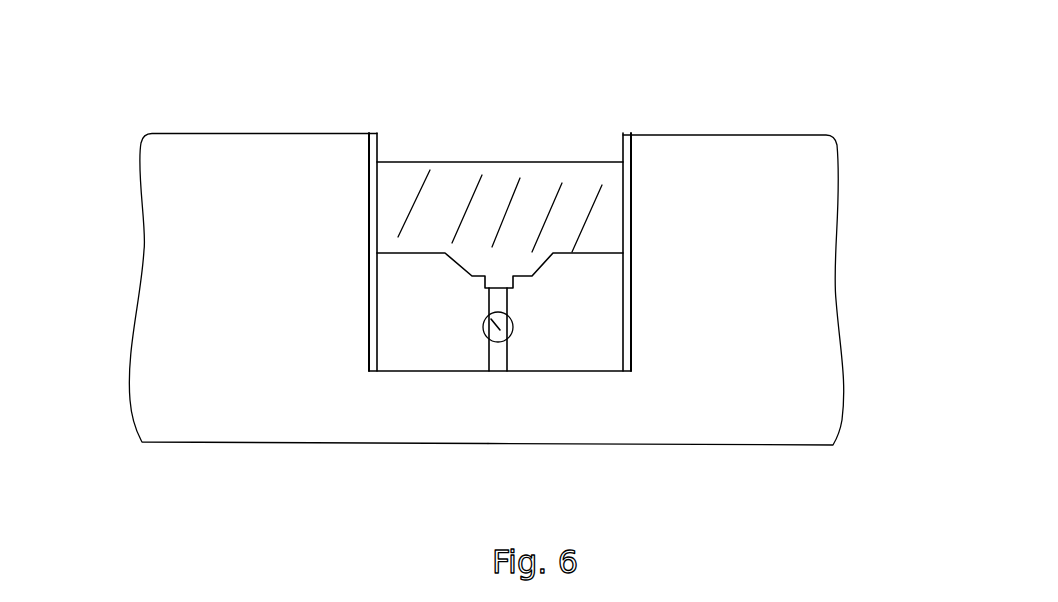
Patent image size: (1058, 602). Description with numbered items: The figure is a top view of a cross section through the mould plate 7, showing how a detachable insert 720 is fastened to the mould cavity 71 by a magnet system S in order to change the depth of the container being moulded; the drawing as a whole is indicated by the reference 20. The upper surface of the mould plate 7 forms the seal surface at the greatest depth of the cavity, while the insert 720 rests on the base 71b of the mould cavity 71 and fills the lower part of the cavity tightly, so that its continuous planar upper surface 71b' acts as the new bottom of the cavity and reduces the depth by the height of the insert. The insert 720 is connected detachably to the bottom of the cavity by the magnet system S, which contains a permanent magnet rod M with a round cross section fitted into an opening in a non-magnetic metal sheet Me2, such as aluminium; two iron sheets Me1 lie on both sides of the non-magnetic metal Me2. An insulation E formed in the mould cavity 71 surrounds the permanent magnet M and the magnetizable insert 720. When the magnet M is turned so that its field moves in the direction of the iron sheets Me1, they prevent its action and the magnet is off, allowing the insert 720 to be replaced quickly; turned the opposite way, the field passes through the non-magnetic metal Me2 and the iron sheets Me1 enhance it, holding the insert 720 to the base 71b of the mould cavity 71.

The mould assembly 20 is at (502, 239).
The mould plate 7 is at (823, 188).
The mould cavity 71 is at (493, 265).
The base of the mould cavity 71b is at (776, 252).
The upper portion of insert 71b' is at (500, 154).
The detachable insert 720 is at (513, 170).
The insulation E is at (365, 204).
The iron sheets Me1 is at (387, 292).
The non-magnetic metal sheet Me2 is at (487, 370).
The permanent magnet rod M is at (507, 333).
The magnet system S is at (423, 370).